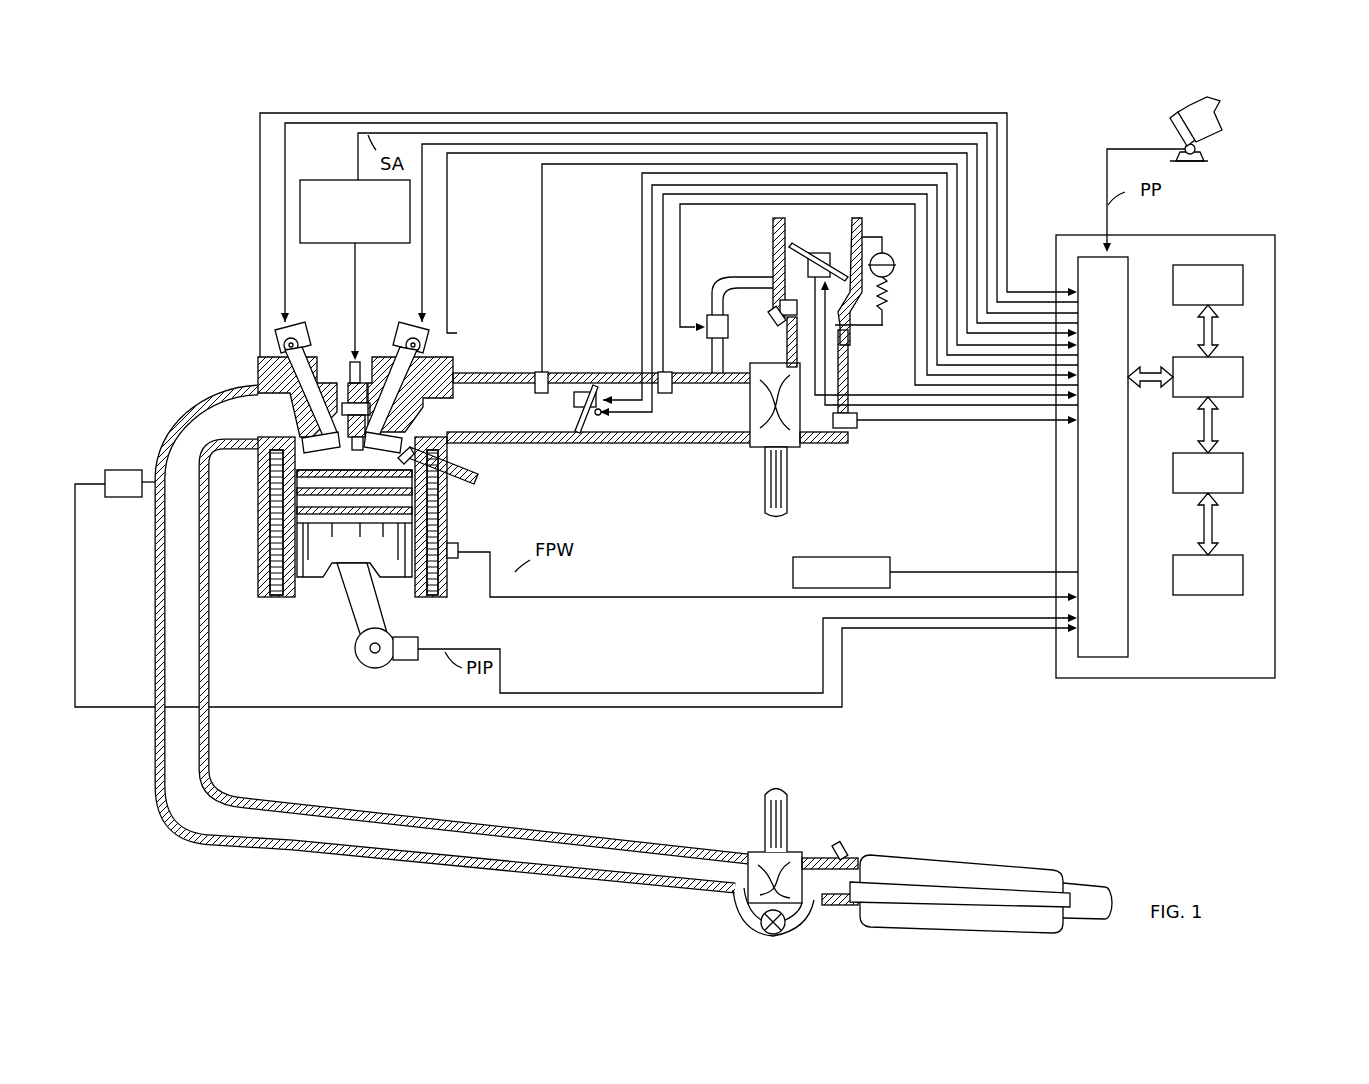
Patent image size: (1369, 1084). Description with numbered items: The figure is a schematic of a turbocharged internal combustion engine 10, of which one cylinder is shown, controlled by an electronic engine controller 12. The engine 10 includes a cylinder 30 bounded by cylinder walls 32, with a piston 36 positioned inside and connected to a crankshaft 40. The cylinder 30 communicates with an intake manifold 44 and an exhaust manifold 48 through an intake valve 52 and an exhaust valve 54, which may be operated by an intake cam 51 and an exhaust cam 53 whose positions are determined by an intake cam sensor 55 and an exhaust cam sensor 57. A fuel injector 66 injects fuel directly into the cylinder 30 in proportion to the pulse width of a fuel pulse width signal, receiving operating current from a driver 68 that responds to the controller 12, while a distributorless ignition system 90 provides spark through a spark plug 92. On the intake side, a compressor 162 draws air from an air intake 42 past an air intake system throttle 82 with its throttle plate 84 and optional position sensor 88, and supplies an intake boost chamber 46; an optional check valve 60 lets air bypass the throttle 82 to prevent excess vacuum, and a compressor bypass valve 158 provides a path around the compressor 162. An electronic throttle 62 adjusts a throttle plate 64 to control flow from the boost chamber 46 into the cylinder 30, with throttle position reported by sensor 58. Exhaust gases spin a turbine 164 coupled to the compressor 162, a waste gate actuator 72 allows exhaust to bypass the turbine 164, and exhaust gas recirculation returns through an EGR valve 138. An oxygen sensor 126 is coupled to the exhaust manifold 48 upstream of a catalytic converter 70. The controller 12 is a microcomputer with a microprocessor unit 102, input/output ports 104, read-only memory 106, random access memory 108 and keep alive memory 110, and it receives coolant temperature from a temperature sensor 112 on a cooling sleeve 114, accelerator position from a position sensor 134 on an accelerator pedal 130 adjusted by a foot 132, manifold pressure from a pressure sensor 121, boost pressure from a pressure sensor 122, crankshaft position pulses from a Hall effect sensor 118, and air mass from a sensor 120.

The internal combustion engine 10 is at (190, 316).
The electronic engine controller 12 is at (1210, 440).
The cylinder 30 is at (363, 548).
The cylinder walls 32 is at (302, 590).
The piston 36 is at (337, 552).
The crankshaft 40 is at (380, 631).
The air intake 42 is at (769, 295).
The intake manifold 44 is at (509, 422).
The intake boost chamber 46 is at (689, 422).
The exhaust manifold 48 is at (238, 428).
The intake cam 51 is at (410, 322).
The intake valve 52 is at (421, 358).
The exhaust cam 53 is at (295, 322).
The exhaust valve 54 is at (278, 359).
The intake cam sensor 55 is at (432, 348).
The exhaust cam sensor 57 is at (280, 347).
The throttle position sensor 58 is at (603, 416).
The check valve 60 is at (886, 318).
The electronic throttle 62 is at (607, 398).
The throttle plate 64 is at (590, 382).
The fuel injector 66 is at (450, 452).
The driver 68 is at (890, 576).
The catalytic converter 70 is at (952, 883).
The waste gate actuator 72 is at (758, 928).
The air intake system throttle 82 is at (795, 258).
The throttle plate 84 is at (798, 252).
The position sensor 88 is at (773, 266).
The distributorless ignition system 90 is at (304, 180).
The spark plug 92 is at (360, 362).
The microprocessor unit 102 is at (1245, 372).
The input/output ports 104 is at (1130, 265).
The read-only memory 106 is at (1245, 282).
The random access memory 108 is at (1245, 472).
The keep alive memory 110 is at (1245, 572).
The temperature sensor 112 is at (462, 548).
The cooling sleeve 114 is at (450, 583).
The Hall effect sensor 118 is at (403, 661).
The air mass sensor 120 is at (855, 428).
The pressure sensor 121 is at (538, 372).
The pressure sensor 122 is at (668, 372).
The Universal Exhaust Gas Oxygen sensor 126 is at (105, 474).
The accelerator pedal 130 is at (1224, 130).
The foot 132 is at (1218, 113).
The position sensor 134 is at (1200, 149).
The EGR valve 138 is at (780, 307).
The compressor bypass valve 158 is at (709, 315).
The compressor 162 is at (775, 440).
The turbine 164 is at (777, 846).